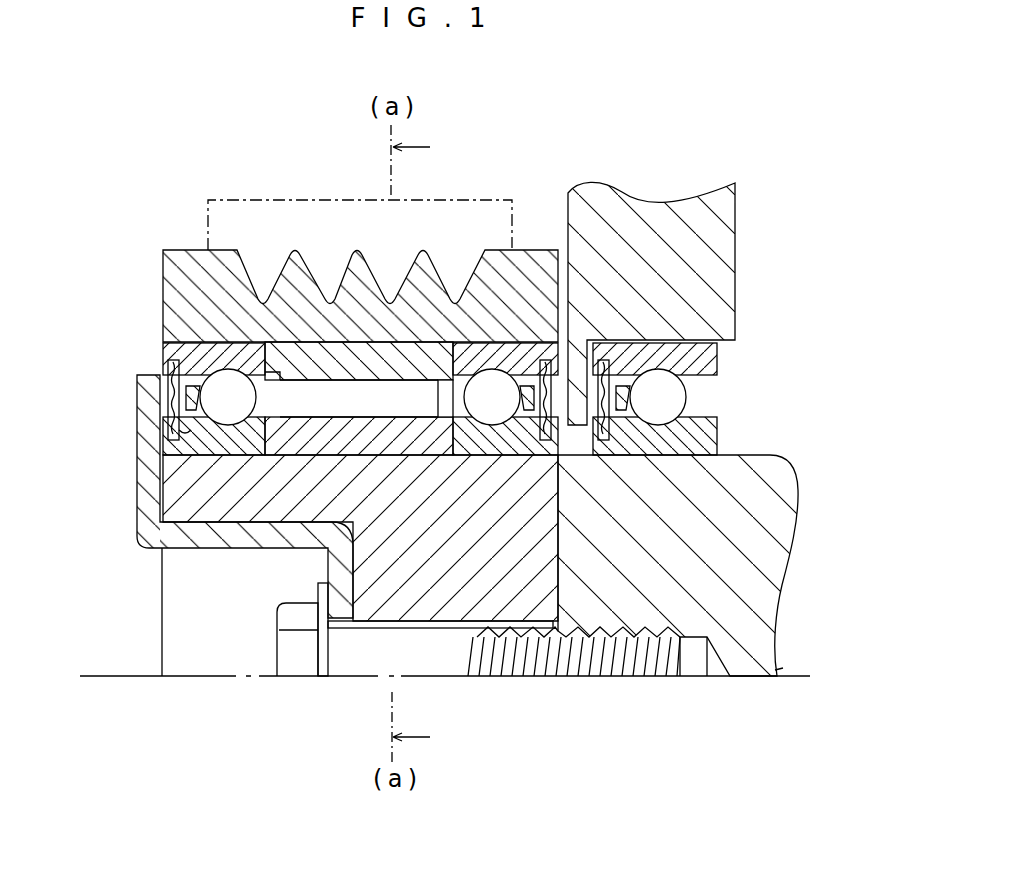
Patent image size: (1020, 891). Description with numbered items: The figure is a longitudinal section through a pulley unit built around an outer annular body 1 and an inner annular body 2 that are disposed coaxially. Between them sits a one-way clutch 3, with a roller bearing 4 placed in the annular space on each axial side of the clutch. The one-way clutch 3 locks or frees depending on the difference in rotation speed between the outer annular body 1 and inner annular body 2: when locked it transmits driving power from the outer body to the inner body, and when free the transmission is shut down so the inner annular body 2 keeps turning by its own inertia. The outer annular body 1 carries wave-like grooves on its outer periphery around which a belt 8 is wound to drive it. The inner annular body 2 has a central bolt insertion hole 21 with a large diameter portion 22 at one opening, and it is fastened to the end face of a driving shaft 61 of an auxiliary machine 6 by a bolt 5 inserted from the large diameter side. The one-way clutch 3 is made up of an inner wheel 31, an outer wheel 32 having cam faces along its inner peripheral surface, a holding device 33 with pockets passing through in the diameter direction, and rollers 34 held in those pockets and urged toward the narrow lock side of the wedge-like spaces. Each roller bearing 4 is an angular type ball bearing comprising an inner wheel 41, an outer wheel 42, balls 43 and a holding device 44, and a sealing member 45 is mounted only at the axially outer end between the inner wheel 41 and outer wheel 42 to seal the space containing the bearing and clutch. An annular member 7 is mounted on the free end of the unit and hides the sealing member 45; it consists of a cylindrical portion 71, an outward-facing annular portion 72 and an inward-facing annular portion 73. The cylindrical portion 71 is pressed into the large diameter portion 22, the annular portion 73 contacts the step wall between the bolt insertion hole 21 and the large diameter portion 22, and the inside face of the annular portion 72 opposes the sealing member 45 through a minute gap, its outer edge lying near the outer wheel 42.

The outer annular body 1 is at (170, 263).
The inner annular body 2 is at (177, 493).
The one-way clutch 3 is at (374, 301).
The roller bearing 4 is at (322, 311).
The bolt 5 is at (297, 660).
The auxiliary machine 6 is at (714, 191).
The annular member 7 is at (220, 496).
The belt 8 is at (298, 200).
The bolt insertion hole 21 is at (371, 628).
The large diameter portion 22 is at (235, 522).
The inner wheel 31 is at (325, 440).
The outer wheel 32 is at (412, 360).
The holding device 33 is at (443, 378).
The rollers 34 is at (368, 402).
The inner wheel 41 is at (188, 442).
The outer wheel 42 is at (163, 358).
The balls 43 is at (200, 370).
The holding device 44 is at (143, 416).
The sealing member 45 is at (170, 378).
The driving shaft 61 is at (767, 460).
The cylindrical portion 71 is at (208, 535).
The annular portion 72 is at (148, 483).
The annular portion 73 is at (342, 575).